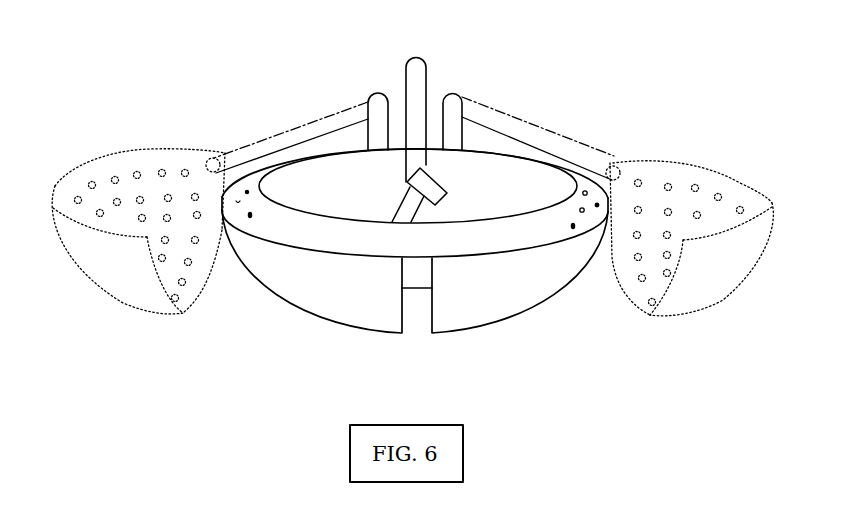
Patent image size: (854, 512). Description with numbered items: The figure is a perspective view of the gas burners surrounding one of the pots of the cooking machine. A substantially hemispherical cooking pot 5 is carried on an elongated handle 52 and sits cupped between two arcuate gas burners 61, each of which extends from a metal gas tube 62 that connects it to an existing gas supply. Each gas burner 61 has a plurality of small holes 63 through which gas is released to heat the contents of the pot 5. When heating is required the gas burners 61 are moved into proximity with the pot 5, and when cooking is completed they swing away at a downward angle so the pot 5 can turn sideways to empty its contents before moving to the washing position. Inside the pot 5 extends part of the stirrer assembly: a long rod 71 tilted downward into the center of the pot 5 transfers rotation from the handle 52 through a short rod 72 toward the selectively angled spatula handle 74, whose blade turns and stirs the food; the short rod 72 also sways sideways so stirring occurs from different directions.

The cooking pot 5 is at (560, 164).
The handle 52 is at (415, 93).
The gas burner 61 is at (297, 297).
The gas tube 62 is at (368, 110).
The small holes 63 is at (247, 185).
The long rod 71 is at (407, 160).
The short rod 72 is at (447, 190).
The spatula handle 74 is at (414, 212).